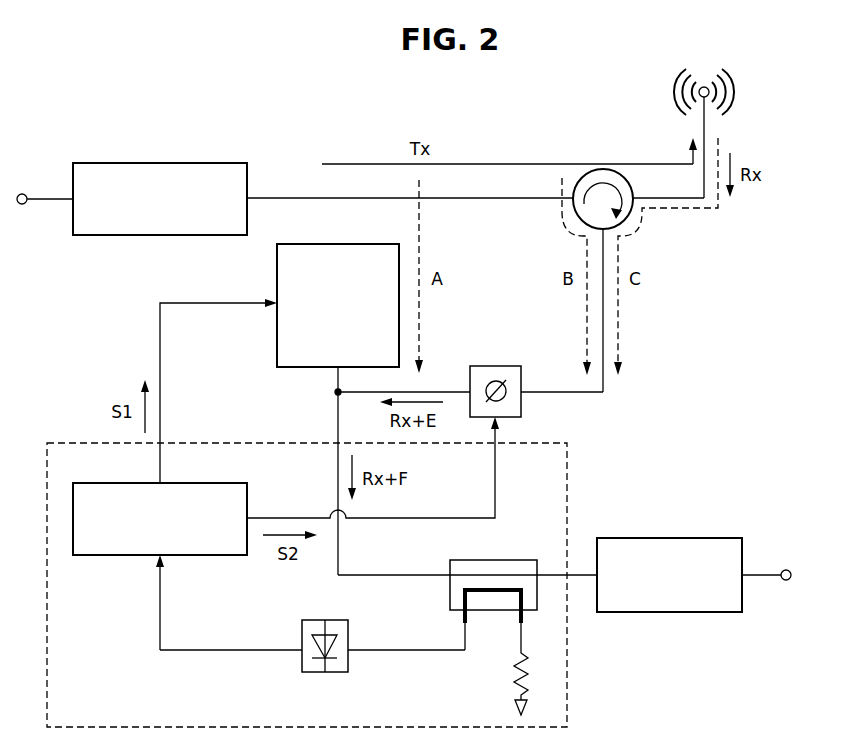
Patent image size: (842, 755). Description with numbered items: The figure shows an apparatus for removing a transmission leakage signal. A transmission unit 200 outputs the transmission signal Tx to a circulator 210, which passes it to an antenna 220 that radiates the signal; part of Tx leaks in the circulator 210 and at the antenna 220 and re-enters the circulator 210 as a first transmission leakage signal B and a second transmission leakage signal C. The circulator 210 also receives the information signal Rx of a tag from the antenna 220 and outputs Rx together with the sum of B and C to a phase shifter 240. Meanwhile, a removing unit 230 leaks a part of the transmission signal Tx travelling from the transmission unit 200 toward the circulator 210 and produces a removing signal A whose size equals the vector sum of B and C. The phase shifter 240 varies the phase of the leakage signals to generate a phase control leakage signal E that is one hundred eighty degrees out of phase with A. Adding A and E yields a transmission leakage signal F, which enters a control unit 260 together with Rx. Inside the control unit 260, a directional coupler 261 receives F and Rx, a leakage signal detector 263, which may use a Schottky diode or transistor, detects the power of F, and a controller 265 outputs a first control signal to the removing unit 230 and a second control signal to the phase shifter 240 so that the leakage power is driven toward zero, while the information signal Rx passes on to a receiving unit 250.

The transmission unit 200 is at (162, 163).
The circulator 210 is at (603, 168).
The antenna 220 is at (733, 88).
The removing unit 230 is at (340, 244).
The phase shifter 240 is at (496, 366).
The receiving unit 250 is at (673, 538).
The control unit 260 is at (567, 467).
The directional coupler 261 is at (497, 558).
The leakage signal detector 263 is at (333, 620).
The controller 265 is at (187, 483).